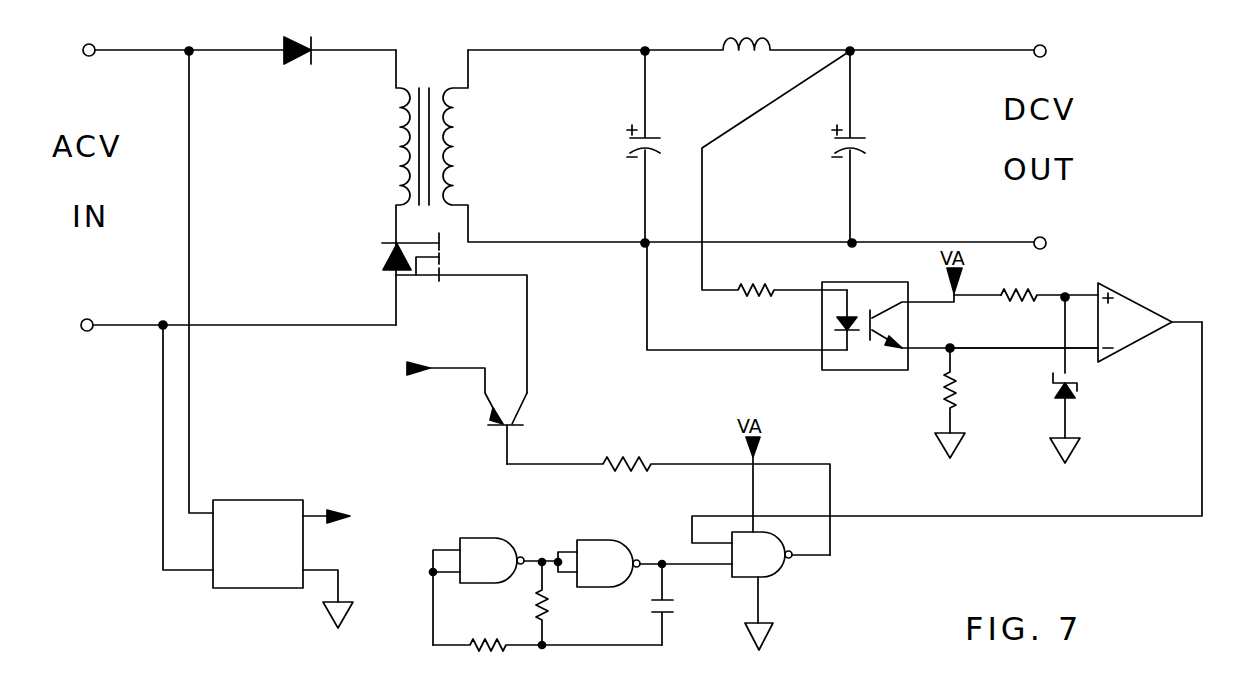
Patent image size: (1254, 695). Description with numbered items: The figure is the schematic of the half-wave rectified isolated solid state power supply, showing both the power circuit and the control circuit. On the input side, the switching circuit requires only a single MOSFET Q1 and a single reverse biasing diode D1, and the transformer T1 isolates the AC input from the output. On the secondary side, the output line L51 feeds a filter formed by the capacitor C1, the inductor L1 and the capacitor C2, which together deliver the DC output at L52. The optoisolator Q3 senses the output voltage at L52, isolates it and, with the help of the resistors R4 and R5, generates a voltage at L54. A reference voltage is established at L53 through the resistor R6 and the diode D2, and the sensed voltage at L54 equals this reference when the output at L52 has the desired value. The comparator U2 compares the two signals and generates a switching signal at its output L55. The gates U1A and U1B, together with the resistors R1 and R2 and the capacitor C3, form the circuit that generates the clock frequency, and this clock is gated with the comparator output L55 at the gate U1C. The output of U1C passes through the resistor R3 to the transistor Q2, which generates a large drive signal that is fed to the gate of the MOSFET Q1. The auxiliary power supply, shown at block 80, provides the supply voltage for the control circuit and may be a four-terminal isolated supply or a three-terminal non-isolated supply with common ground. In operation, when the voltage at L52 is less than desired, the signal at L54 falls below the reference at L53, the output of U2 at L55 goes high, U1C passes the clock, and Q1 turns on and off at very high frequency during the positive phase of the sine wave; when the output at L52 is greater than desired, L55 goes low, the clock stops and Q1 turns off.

The reverse biasing diode D1 is at (339, 64).
The transformer T1 is at (520, 146).
The MOSFET Q1 is at (441, 313).
The transistor Q2 is at (465, 412).
The output lead L51 is at (552, 53).
The inductor L1 is at (747, 58).
The output L52 is at (887, 53).
The capacitor C1 is at (659, 146).
The capacitor C2 is at (865, 146).
The resistor R4 is at (776, 173).
The optoisolator Q3 is at (872, 318).
The resistor R6 is at (1049, 282).
The comparator U2 is at (1150, 322).
The reference voltage line L53 is at (1063, 336).
The sensed voltage line L54 is at (955, 347).
The resistor R5 is at (962, 403).
The zener diode D2 is at (1080, 418).
The comparator output L55 is at (1203, 420).
The resistor R3 is at (668, 495).
The gate U1A is at (495, 591).
The gate U1B is at (645, 563).
The gate U1C is at (781, 591).
The resistor R1 is at (547, 632).
The resistor R2 is at (558, 603).
The capacitor C3 is at (679, 604).
The auxiliary power supply 80 is at (243, 500).